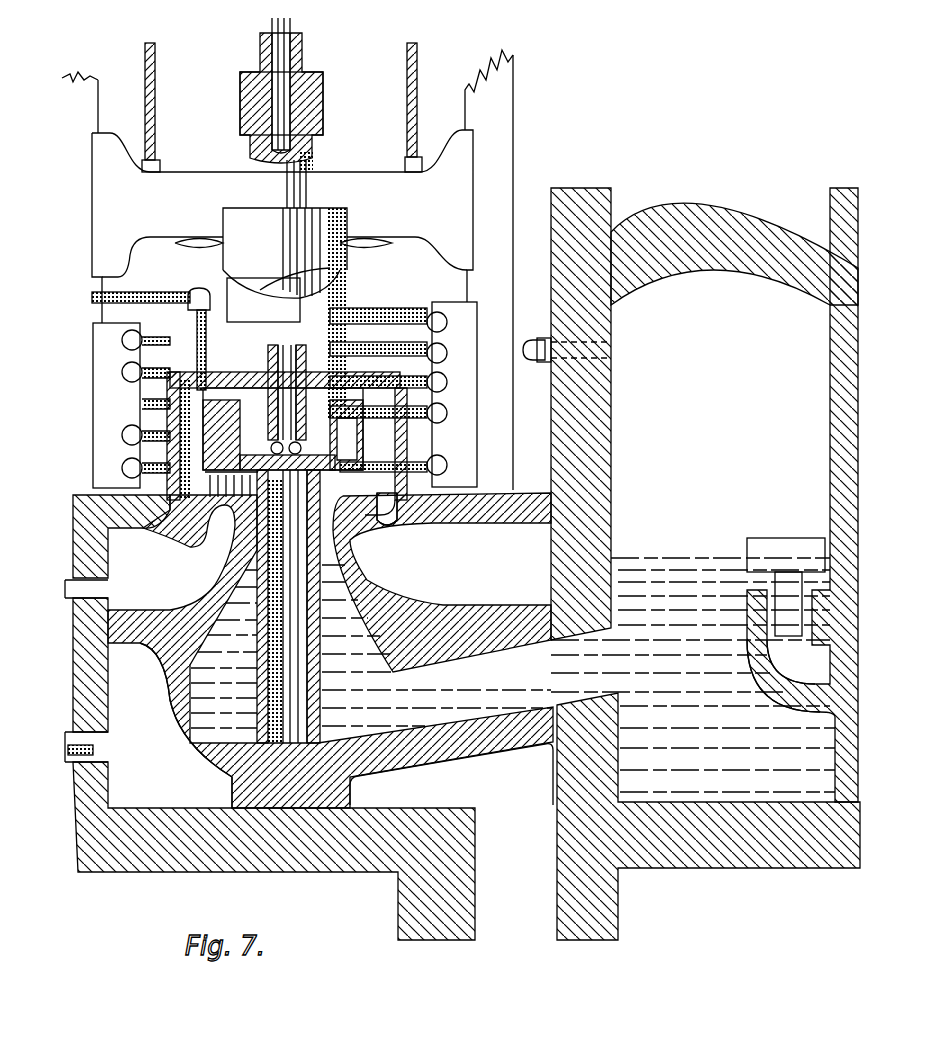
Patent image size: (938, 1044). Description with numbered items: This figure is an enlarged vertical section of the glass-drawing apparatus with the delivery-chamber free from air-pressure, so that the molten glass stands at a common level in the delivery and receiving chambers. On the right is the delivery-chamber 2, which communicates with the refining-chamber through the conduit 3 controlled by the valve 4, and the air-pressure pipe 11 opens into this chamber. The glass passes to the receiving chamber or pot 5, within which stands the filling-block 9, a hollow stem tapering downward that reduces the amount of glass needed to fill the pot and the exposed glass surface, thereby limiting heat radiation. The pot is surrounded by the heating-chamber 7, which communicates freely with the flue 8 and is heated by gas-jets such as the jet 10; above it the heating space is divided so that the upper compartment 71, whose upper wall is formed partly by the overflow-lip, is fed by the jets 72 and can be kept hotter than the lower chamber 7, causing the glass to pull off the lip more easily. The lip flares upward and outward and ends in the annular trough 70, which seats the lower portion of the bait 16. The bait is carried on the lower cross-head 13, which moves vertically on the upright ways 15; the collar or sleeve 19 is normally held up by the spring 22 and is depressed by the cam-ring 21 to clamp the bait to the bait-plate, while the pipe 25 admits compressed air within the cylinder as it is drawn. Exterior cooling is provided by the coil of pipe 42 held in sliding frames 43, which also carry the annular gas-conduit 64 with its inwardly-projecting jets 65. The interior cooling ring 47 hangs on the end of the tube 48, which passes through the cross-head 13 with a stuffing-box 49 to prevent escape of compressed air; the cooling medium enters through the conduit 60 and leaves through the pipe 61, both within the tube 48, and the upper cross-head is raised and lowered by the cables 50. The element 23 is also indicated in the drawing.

The delivery-chamber 2 is at (705, 564).
The conduit 3 is at (798, 676).
The valve 4 is at (782, 541).
The receiving chamber or pot 5 is at (345, 686).
The heating-chamber 7 is at (451, 774).
The flue 8 is at (300, 851).
The filling-block 9 is at (288, 606).
The gas-jet 10 is at (108, 750).
The pipe 11 is at (536, 338).
The cross-head 13 is at (282, 226).
The upright ways 15 is at (287, 270).
The bait 16 is at (297, 481).
The collar or sleeve 19 is at (263, 300).
The cam-ring 21 is at (285, 253).
The spring 22 is at (337, 345).
The spring 23 is at (381, 252).
The pipe 25 is at (146, 292).
The coil of pipe 42 is at (182, 333).
The sliding frames 43 is at (122, 375).
The cooling ring or chamber 47 is at (350, 437).
The tube 48 is at (303, 62).
The stuffing-box 49 is at (323, 80).
The cables or ropes 50 is at (165, 46).
The conduit 60 is at (292, 40).
The pipe 61 is at (272, 28).
The ring or annular gas-conduit 64 is at (122, 469).
The inwardly-projecting jets 65 is at (122, 444).
The annular depression or trough 70 is at (418, 510).
The upper compartment 71 is at (330, 650).
The jets 72 is at (98, 590).